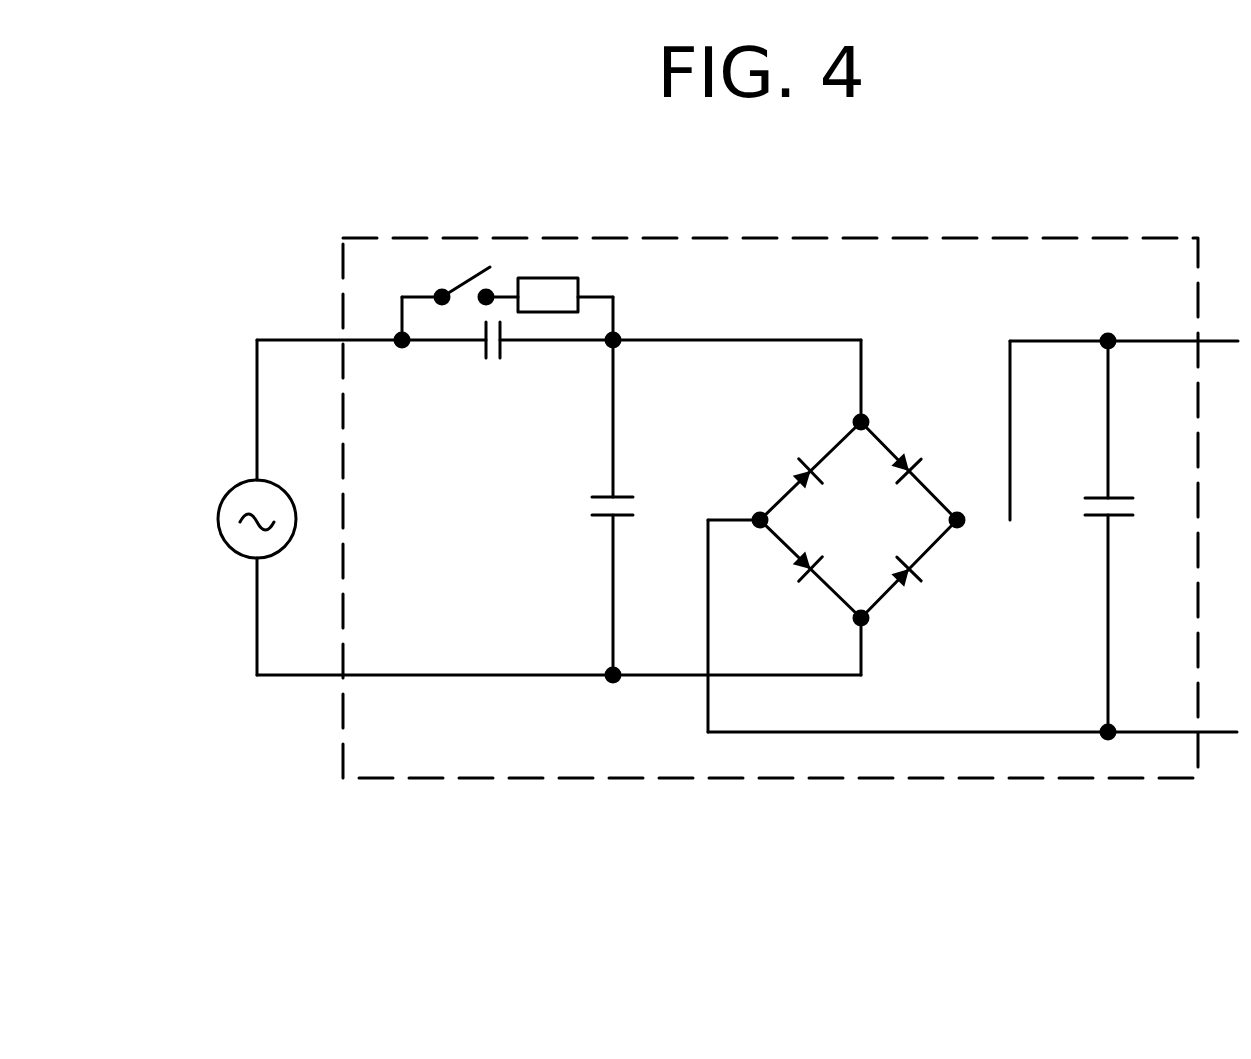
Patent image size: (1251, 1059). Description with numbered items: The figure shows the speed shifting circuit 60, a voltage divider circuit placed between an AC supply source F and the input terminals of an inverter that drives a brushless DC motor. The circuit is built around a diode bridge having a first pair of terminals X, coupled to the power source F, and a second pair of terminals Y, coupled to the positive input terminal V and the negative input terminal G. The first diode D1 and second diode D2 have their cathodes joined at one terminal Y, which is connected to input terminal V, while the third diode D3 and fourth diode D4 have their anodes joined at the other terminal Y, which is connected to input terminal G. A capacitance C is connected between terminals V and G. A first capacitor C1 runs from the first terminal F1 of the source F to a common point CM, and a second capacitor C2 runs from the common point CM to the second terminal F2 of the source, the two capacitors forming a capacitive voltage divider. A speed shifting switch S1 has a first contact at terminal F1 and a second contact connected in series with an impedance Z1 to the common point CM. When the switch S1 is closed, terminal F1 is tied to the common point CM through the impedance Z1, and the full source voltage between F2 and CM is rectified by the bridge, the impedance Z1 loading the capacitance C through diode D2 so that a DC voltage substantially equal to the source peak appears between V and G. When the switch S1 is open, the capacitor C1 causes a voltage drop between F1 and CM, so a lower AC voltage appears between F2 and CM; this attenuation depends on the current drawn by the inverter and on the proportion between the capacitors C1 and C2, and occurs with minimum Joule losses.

The speed shifting circuit 60 is at (644, 790).
The AC supply source F is at (220, 512).
The first terminal of the power source F1 is at (329, 319).
The second terminal of the power source F2 is at (435, 698).
The speed shifting switch S1 is at (462, 288).
The impedance Z1 is at (548, 278).
The first capacitor C1 is at (504, 362).
The common point CM is at (622, 336).
The second capacitor C2 is at (600, 497).
The first pair of terminals of the diode bridge X is at (875, 530).
The second pair of terminals of the diode bridge Y is at (856, 506).
The first diode D1 is at (917, 569).
The second diode D2 is at (917, 471).
The third diode D3 is at (795, 471).
The fourth diode D4 is at (810, 576).
The capacitance C is at (1116, 496).
The positive input terminal V is at (1124, 323).
The negative input terminal G is at (972, 753).